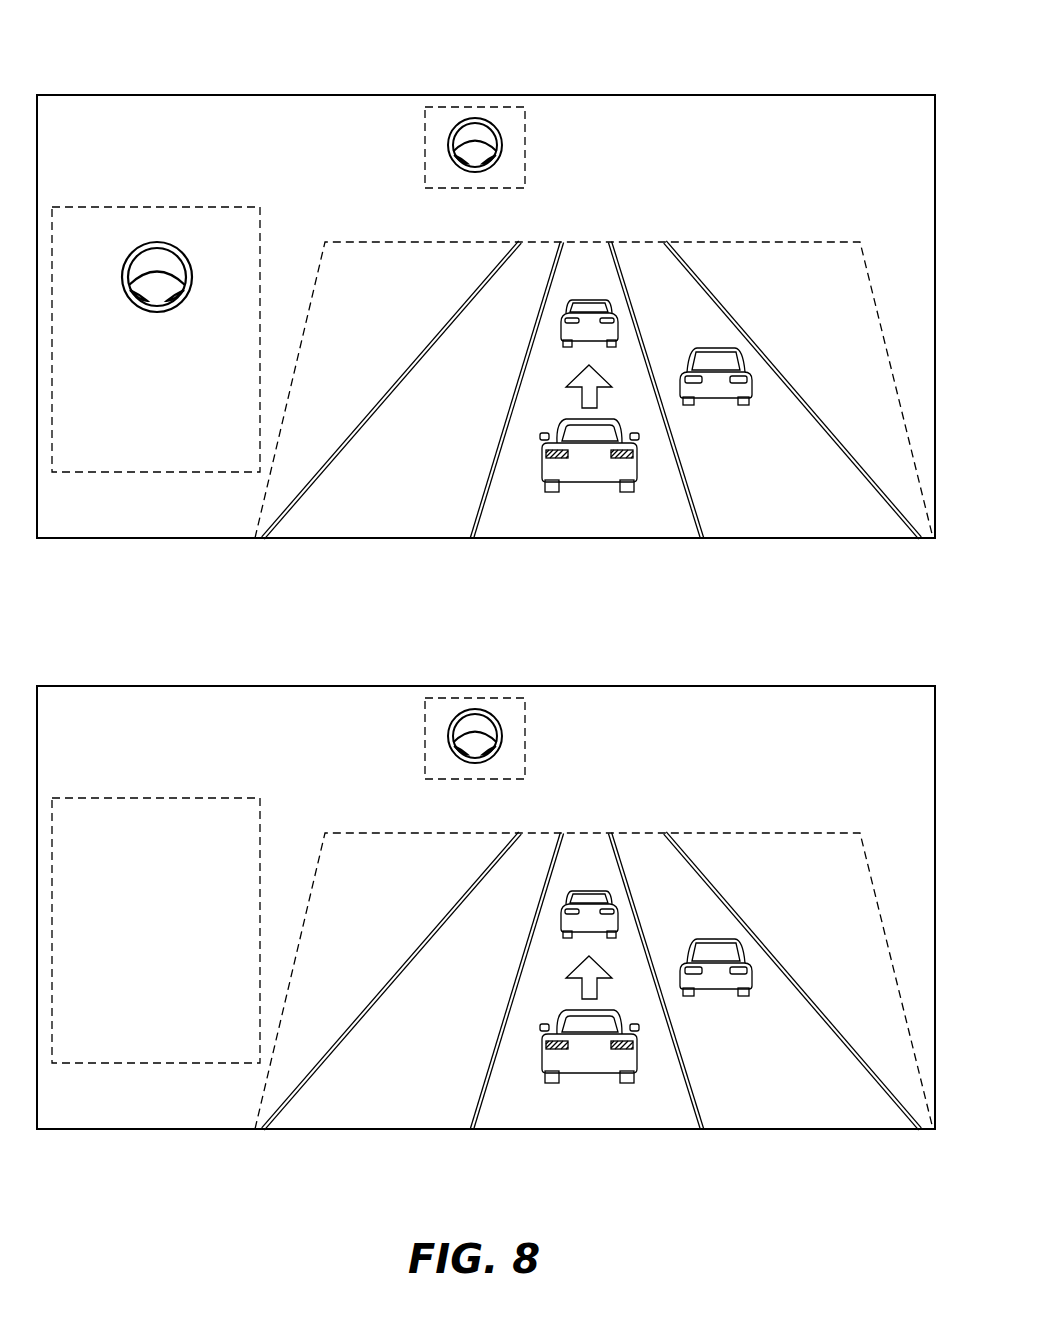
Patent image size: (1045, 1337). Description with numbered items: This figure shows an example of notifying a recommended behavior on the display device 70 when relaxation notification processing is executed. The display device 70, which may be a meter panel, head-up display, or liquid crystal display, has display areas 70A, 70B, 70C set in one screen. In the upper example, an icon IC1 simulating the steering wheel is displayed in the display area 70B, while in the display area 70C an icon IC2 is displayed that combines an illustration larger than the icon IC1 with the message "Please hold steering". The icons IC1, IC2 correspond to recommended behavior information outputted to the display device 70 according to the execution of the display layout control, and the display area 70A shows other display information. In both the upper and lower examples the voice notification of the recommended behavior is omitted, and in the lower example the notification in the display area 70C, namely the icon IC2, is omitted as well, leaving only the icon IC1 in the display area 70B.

The display device 70 is at (486, 571).
The display area 70A is at (594, 592).
The display area 70B is at (448, 406).
The display area 70C is at (181, 564).
The icon IC1 is at (437, 410).
The icon IC2 is at (216, 277).